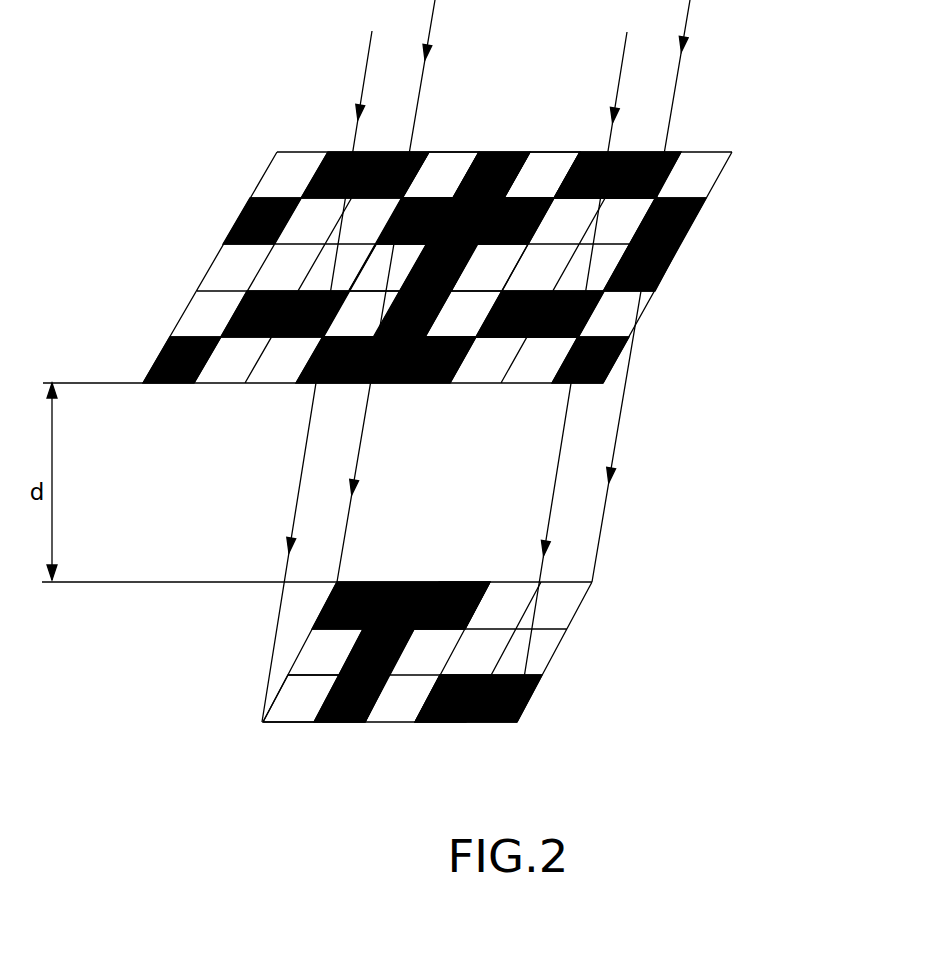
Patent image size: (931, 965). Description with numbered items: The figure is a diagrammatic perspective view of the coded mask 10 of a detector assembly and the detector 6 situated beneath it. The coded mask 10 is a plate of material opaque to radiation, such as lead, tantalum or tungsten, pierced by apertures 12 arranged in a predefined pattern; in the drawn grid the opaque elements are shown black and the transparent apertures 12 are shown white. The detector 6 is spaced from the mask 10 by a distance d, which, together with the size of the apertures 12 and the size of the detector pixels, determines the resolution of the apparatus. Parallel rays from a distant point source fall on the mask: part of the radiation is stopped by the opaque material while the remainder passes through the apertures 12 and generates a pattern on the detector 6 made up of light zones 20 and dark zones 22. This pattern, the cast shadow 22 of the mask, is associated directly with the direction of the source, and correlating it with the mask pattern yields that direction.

The coded mask 10 is at (698, 228).
The apertures 12 is at (490, 262).
The detector 6 is at (535, 692).
The light zones 20 is at (387, 717).
The dark zones 22 is at (458, 695).